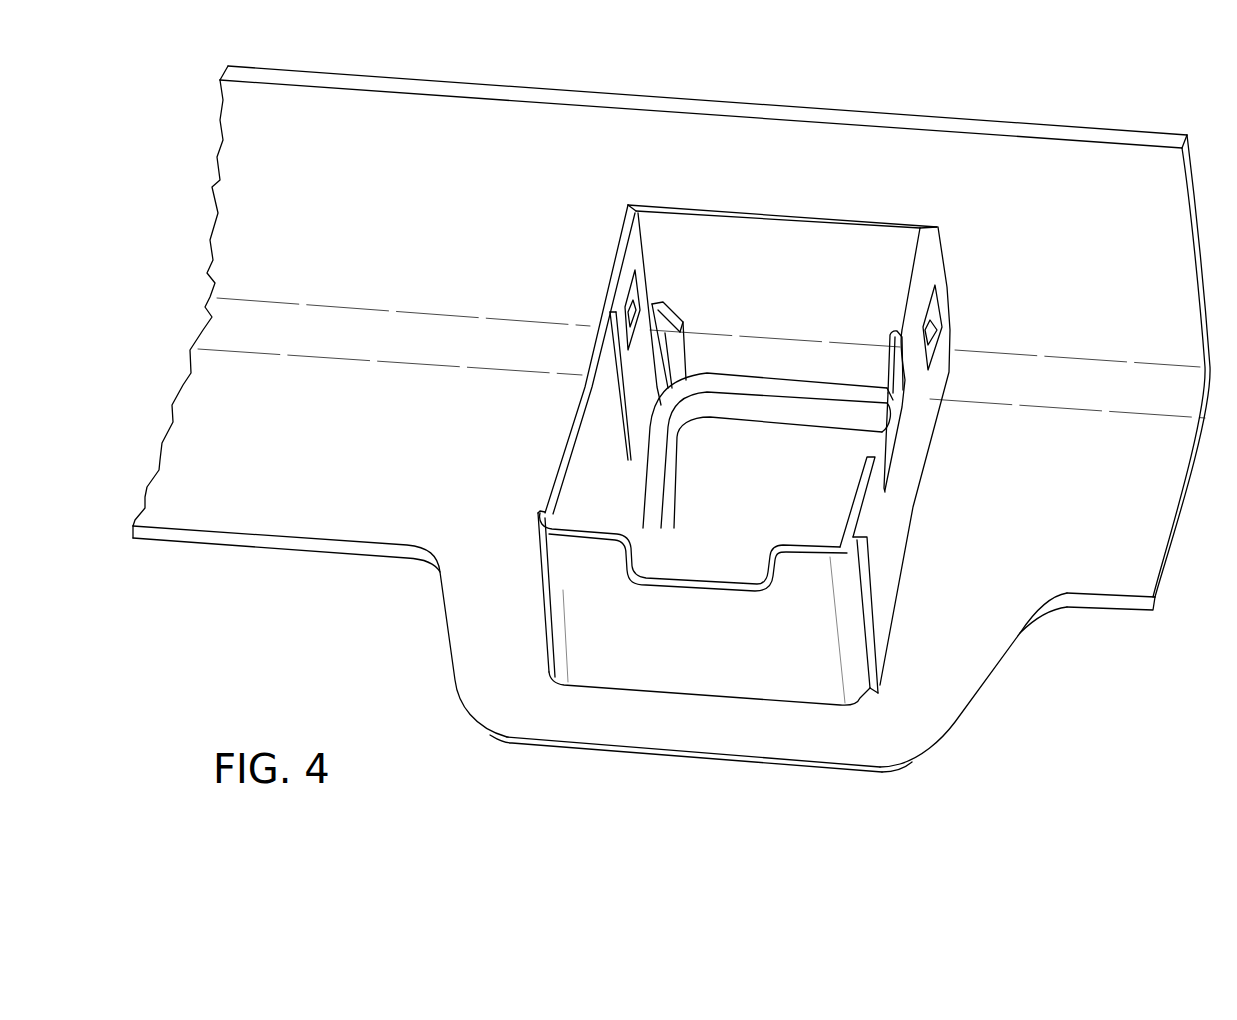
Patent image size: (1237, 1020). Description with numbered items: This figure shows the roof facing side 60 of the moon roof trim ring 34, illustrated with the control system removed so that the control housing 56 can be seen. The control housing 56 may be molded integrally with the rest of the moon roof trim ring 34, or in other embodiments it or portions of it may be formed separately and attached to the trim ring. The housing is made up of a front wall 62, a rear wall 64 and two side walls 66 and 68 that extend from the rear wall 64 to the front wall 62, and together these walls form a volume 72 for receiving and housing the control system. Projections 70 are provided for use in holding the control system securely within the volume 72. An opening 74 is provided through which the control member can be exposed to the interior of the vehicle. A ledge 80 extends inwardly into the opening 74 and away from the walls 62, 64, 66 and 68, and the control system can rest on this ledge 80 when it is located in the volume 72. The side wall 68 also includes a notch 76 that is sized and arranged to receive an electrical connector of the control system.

The moon roof trim ring 34 is at (433, 246).
The roof facing side 60 is at (1003, 266).
The control housing 56 is at (714, 450).
The front wall 62 is at (677, 660).
The rear wall 64 is at (792, 237).
The side wall 66 is at (585, 351).
The side wall 68 is at (930, 423).
The projections 70 is at (682, 318).
The volume 72 is at (687, 267).
The opening 74 is at (785, 457).
The notch 76 is at (890, 460).
The ledge 80 is at (648, 472).